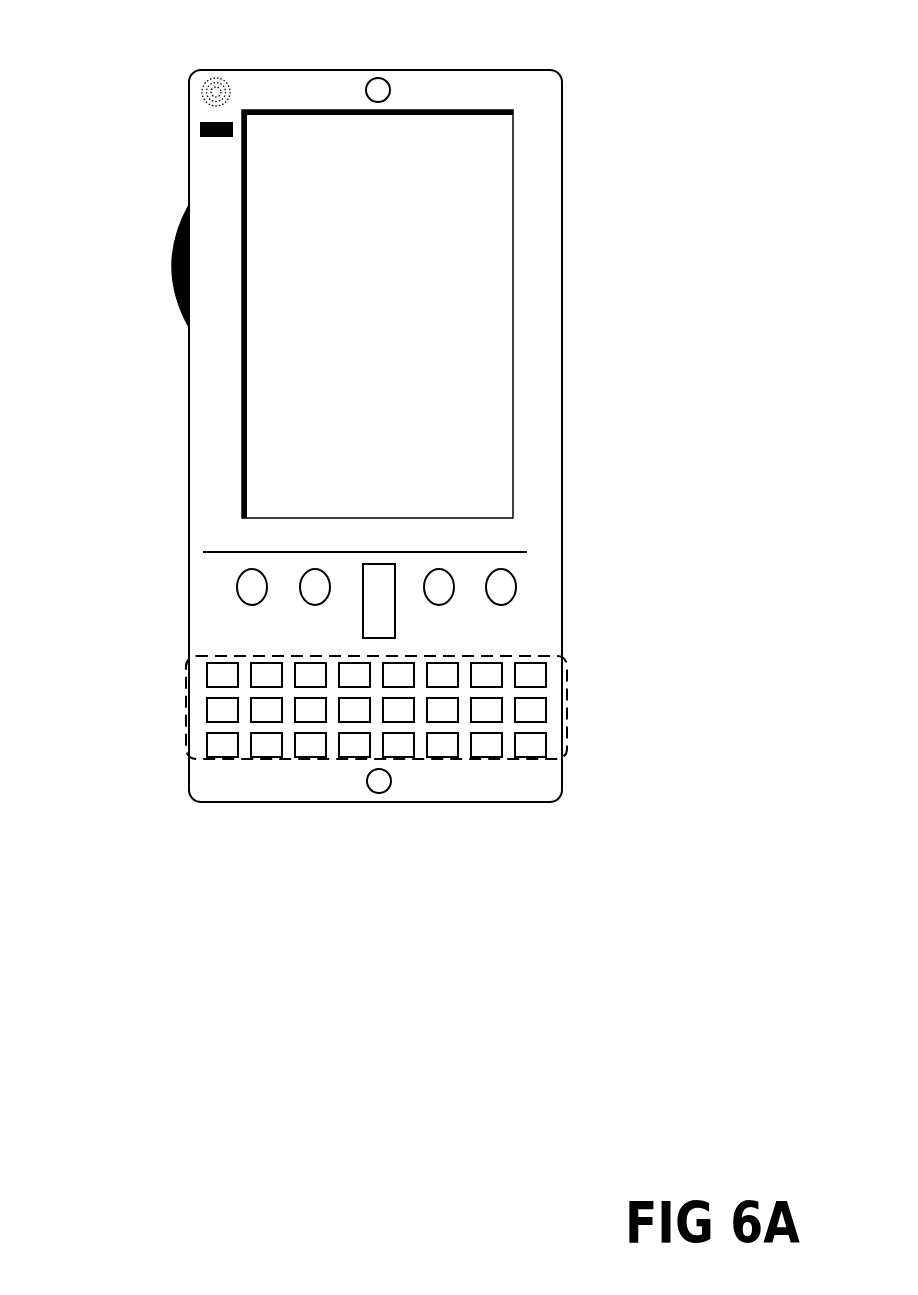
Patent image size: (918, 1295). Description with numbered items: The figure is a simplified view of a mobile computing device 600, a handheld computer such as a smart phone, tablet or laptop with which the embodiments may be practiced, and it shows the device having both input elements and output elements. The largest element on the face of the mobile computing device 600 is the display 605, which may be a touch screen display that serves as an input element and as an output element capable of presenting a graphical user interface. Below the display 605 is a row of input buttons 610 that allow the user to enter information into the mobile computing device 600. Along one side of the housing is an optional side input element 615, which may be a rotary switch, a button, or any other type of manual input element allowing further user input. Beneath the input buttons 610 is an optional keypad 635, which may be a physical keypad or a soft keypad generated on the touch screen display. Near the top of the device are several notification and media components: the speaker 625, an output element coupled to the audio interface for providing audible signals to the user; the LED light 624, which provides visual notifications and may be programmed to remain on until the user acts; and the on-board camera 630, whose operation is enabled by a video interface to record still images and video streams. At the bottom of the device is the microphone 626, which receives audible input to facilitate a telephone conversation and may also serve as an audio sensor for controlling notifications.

The mobile computing device 600 is at (562, 85).
The display 605 is at (265, 459).
The input buttons 610 is at (498, 598).
The side input element 615 is at (170, 275).
The LED light 624 is at (192, 120).
The speaker 625 is at (202, 82).
The microphone 626 is at (367, 784).
The on-board camera 630 is at (392, 80).
The keypad 635 is at (186, 737).